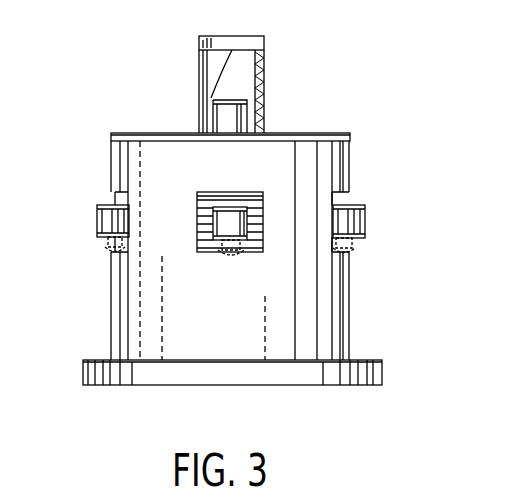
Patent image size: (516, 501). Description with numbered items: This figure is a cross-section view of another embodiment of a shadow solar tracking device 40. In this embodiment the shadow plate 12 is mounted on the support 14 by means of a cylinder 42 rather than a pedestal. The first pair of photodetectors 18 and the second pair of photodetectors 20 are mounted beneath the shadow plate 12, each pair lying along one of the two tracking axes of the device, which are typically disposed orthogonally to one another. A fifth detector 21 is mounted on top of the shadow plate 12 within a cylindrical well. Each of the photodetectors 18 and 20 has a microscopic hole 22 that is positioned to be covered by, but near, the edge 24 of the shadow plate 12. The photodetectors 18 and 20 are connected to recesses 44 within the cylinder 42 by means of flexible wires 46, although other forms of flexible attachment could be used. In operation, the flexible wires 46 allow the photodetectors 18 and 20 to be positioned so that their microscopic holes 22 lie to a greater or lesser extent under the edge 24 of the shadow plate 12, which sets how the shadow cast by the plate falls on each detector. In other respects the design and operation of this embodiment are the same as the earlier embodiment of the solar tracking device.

The solar tracking device 40 is at (152, 100).
The shadow plate 12 is at (310, 133).
The fifth detector 21 is at (238, 113).
The edge 24 is at (351, 138).
The cylinder 42 is at (132, 307).
The recesses 44 is at (114, 196).
The microscopic hole 22 is at (110, 200).
The first pair of photodetectors 18 is at (98, 225).
The second pair of photodetectors 20 is at (237, 225).
The flexible wires 46 is at (108, 247).
The support 14 is at (140, 378).